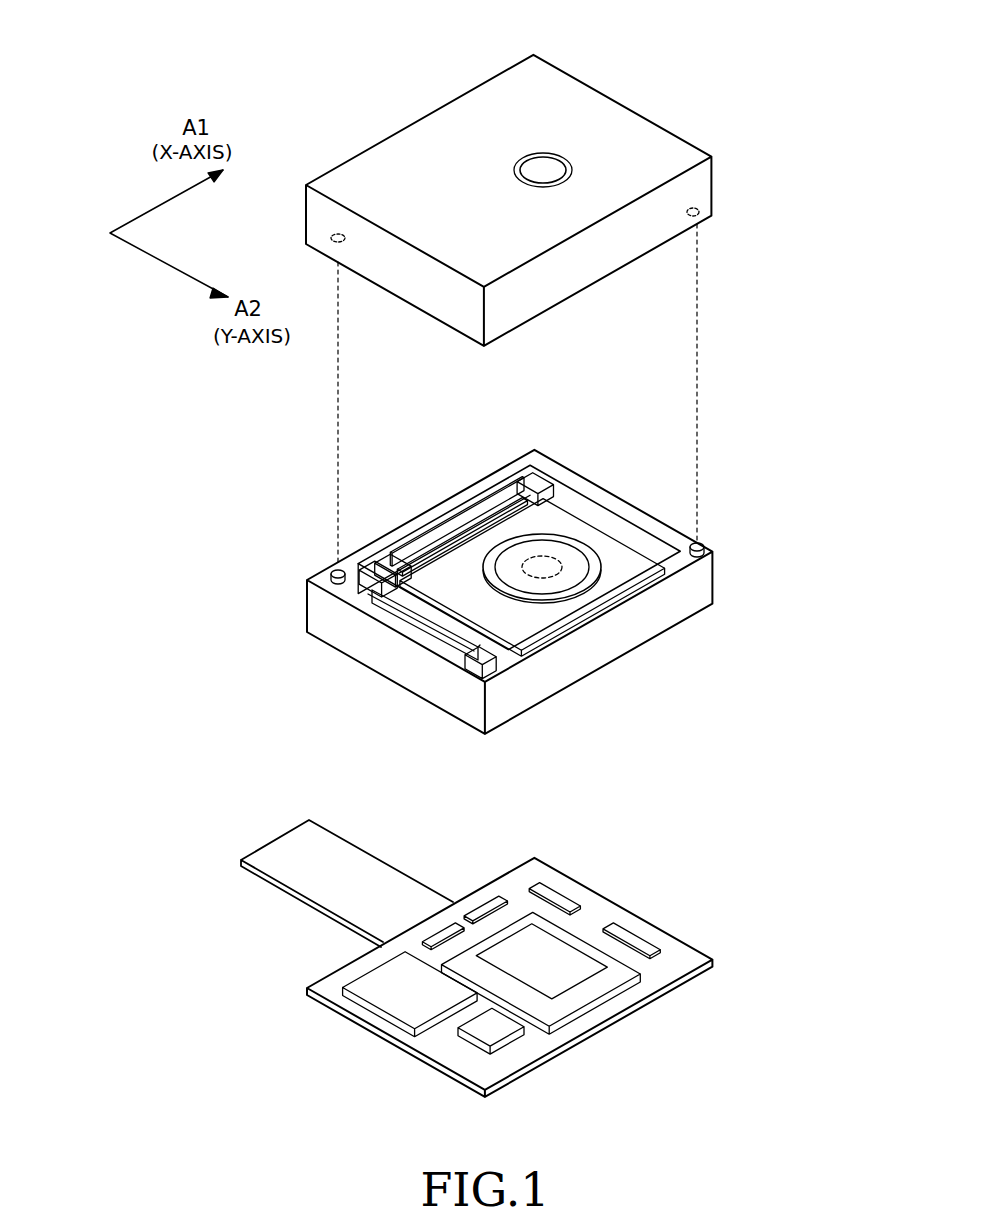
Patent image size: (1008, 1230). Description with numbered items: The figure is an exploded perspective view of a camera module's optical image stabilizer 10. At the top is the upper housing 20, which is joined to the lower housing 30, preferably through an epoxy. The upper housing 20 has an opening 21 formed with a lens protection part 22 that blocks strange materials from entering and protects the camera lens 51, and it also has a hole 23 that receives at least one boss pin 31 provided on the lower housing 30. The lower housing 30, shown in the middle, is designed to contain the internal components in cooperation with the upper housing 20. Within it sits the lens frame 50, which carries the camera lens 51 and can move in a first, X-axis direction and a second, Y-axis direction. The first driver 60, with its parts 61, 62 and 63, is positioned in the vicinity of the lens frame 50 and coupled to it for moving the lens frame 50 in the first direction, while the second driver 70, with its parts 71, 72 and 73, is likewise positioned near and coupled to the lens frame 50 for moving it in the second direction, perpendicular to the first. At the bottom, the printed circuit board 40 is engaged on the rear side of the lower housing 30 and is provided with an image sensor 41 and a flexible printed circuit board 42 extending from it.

The optical image stabilizer 10 is at (330, 67).
The upper housing 20 is at (795, 53).
The opening 21 is at (553, 173).
The lens protection part 22 is at (564, 157).
The hole 23 is at (693, 212).
The lower housing 30 is at (703, 585).
The boss pin 31 is at (700, 545).
The printed circuit board 40 is at (700, 792).
The image sensor 41 is at (542, 963).
The flexible printed circuit board 42 is at (408, 895).
The lens frame 50 is at (612, 528).
The camera lens 51 is at (547, 560).
The first driver 60 is at (224, 642).
The first rail 61 is at (440, 605).
The first support block 62 is at (470, 662).
The first guide bar 63 is at (445, 640).
The second driver 70 is at (196, 435).
The second rail 71 is at (455, 548).
The second support block 72 is at (372, 542).
The second guide bar 73 is at (470, 510).